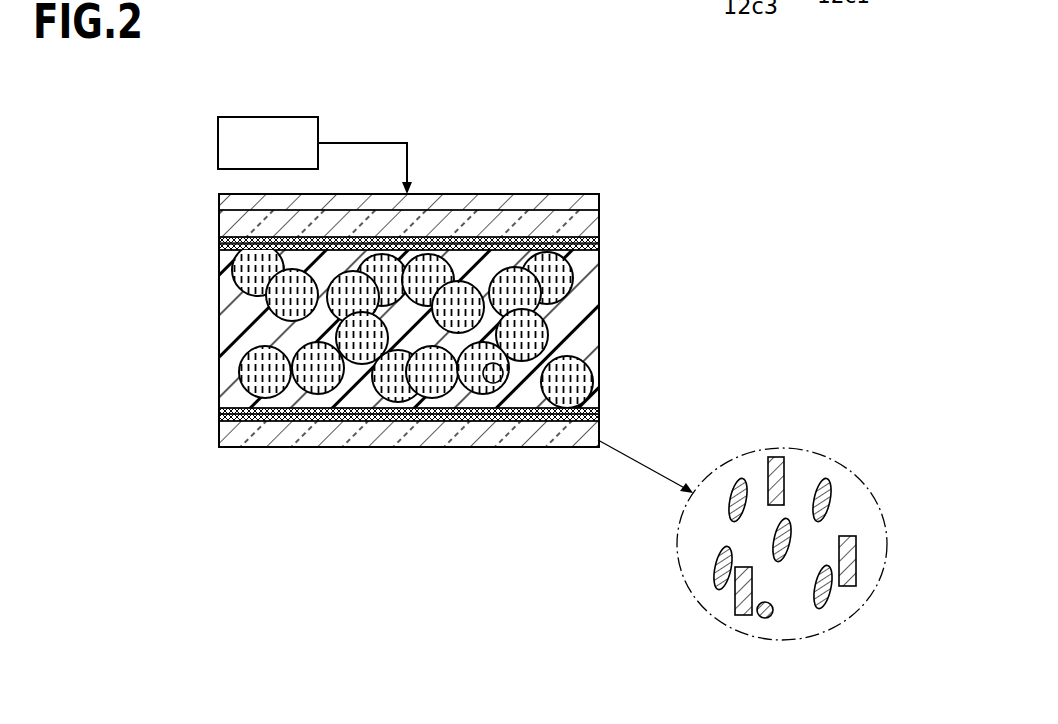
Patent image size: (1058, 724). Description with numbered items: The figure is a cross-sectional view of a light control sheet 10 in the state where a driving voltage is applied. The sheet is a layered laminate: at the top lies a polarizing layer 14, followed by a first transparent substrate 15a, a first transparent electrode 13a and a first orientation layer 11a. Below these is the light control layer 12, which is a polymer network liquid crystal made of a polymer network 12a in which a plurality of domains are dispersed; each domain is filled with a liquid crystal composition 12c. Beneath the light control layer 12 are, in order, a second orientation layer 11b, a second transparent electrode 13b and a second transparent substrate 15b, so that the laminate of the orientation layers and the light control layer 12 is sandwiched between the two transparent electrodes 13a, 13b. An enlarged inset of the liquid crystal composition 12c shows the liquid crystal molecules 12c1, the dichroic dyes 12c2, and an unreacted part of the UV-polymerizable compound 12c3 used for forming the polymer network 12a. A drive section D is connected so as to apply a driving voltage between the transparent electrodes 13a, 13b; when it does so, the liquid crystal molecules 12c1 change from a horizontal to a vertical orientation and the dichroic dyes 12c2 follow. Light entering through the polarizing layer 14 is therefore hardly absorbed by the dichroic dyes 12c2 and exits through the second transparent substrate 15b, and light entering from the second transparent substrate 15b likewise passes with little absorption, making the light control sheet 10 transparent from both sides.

The light control sheet 10 is at (715, 187).
The drive section D is at (218, 142).
The polarizing layer 14 is at (218, 203).
The first transparent substrate 15a is at (598, 228).
The first transparent electrode 13a is at (218, 241).
The first orientation layer 11a is at (598, 247).
The light control layer 12 is at (388, 327).
The polymer network 12a is at (585, 313).
The liquid crystal composition 12c is at (548, 518).
The liquid crystal molecule 12c1 is at (738, 478).
The dichroic dye 12c2 is at (785, 468).
The UV-polymerizable compound 12c3 is at (762, 618).
The second orientation layer 11b is at (598, 412).
The second transparent electrode 13b is at (218, 418).
The second transparent substrate 15b is at (598, 427).